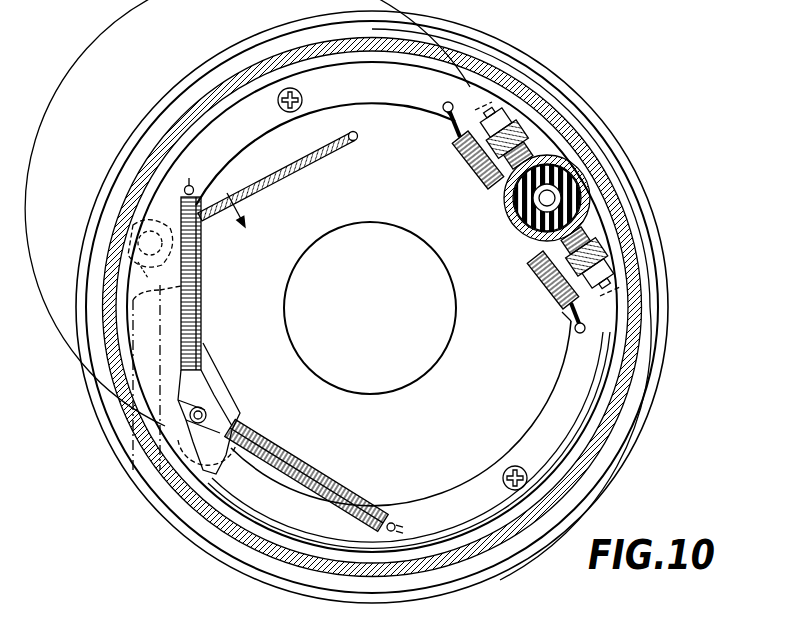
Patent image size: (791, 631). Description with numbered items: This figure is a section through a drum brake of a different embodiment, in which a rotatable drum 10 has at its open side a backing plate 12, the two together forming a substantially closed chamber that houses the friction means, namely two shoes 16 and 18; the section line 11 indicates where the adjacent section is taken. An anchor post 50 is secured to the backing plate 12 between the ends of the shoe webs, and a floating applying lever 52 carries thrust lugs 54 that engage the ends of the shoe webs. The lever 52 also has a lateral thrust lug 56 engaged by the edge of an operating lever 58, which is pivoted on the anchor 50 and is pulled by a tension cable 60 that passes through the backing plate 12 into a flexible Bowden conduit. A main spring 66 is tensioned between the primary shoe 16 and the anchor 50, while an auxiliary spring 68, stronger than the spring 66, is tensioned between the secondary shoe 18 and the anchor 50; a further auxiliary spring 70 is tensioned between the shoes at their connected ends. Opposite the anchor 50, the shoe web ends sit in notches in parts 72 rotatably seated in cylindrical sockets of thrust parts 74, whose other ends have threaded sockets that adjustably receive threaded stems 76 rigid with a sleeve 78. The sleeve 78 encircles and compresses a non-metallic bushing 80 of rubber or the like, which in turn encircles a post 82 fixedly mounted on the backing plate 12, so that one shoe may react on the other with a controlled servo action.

The rotatable drum 10 is at (615, 380).
The section line 11 is at (249, 212).
The backing plate 12 is at (537, 400).
The shoe 16 is at (233, 127).
The shoe 18 is at (471, 507).
The anchor post 50 is at (178, 458).
The lever 52 is at (207, 312).
The lugs 54 is at (228, 404).
The lateral thrust lug 56 is at (208, 282).
The operating lever 58 is at (153, 283).
The tension cable 60 is at (280, 181).
The main spring 66 is at (204, 253).
The auxiliary spring 68 is at (308, 470).
The auxiliary spring 70 is at (542, 275).
The parts 72 is at (524, 102).
The thrust parts 74 is at (522, 124).
The threaded stems 76 is at (527, 132).
The sleeve 78 is at (585, 187).
The non-metallic bushing 80 is at (523, 208).
The post 82 is at (545, 199).